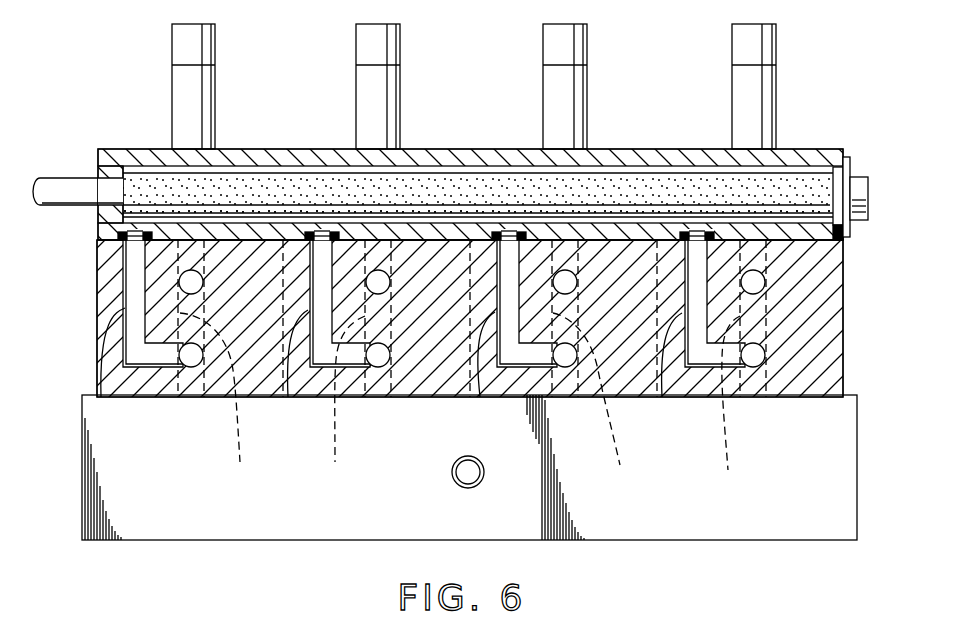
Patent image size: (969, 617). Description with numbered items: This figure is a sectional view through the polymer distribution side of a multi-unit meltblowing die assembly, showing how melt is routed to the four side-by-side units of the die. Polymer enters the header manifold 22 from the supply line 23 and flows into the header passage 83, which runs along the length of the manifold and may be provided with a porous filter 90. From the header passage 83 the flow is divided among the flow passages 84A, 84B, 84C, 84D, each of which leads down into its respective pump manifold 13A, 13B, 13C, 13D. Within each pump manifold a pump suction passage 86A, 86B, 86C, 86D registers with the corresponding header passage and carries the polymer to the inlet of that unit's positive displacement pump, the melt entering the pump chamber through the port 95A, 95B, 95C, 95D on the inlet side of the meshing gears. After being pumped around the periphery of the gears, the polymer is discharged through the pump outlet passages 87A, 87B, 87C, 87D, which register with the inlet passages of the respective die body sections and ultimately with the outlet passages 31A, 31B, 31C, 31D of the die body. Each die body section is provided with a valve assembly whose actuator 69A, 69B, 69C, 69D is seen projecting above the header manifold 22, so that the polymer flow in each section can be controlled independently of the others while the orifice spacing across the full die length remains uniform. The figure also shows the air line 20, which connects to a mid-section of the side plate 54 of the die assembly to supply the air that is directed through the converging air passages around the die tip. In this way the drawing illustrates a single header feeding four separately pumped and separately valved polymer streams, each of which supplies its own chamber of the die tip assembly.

The pump manifold 13A is at (101, 397).
The pump manifold 13B is at (420, 397).
The pump manifold 13C is at (510, 397).
The pump manifold 13D is at (797, 397).
The air line 20 is at (462, 487).
The header manifold 22 is at (789, 145).
The line 23 is at (73, 190).
The outlet passage 31A is at (219, 400).
The outlet passage 31B is at (341, 401).
The outlet passage 31C is at (599, 401).
The outlet passage 31D is at (725, 408).
The side plate 54 is at (620, 527).
The actuator 69A is at (182, 85).
The actuator 69B is at (368, 87).
The actuator 69C is at (553, 83).
The actuator 69D is at (744, 88).
The header passage 83 is at (785, 166).
The flow passage 84A is at (137, 232).
The flow passage 84B is at (320, 232).
The flow passage 84C is at (506, 232).
The flow passage 84D is at (694, 232).
The pump suction passage 86A is at (121, 372).
The pump suction passage 86B is at (288, 397).
The pump suction passage 86C is at (480, 397).
The pump suction passage 86D is at (662, 397).
The pump outlet passage 87A is at (197, 271).
The pump outlet passage 87B is at (383, 271).
The pump outlet passage 87C is at (570, 271).
The pump outlet passage 87D is at (765, 283).
The porous filter 90 is at (522, 192).
The port 95A is at (193, 368).
The port 95B is at (380, 368).
The port 95C is at (568, 368).
The port 95D is at (756, 368).